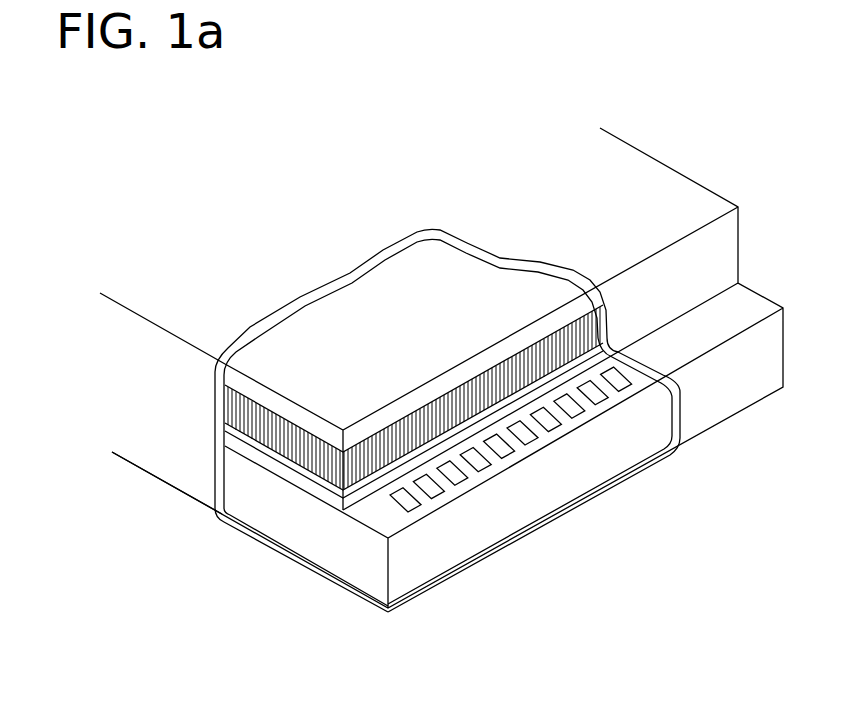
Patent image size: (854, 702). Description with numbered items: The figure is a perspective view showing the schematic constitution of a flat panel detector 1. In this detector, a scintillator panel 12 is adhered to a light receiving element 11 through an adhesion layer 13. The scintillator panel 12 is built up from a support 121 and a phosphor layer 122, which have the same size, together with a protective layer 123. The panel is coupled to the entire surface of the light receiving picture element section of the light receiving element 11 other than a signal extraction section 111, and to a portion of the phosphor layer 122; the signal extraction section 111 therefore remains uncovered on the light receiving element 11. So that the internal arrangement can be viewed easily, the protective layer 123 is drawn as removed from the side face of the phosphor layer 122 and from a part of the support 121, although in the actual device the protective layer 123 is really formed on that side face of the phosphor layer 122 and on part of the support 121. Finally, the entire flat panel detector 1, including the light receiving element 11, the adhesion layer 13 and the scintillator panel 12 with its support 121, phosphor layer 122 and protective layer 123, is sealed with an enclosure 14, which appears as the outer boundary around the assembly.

The flat panel detector 1 is at (370, 139).
The light receiving element 11 is at (316, 541).
The signal extraction section 111 is at (517, 433).
The scintillator panel 12 is at (502, 203).
The support 121 is at (518, 283).
The phosphor layer 122 is at (570, 292).
The protective layer 123 is at (612, 288).
The adhesion layer 13 is at (600, 421).
The enclosure 14 is at (148, 321).